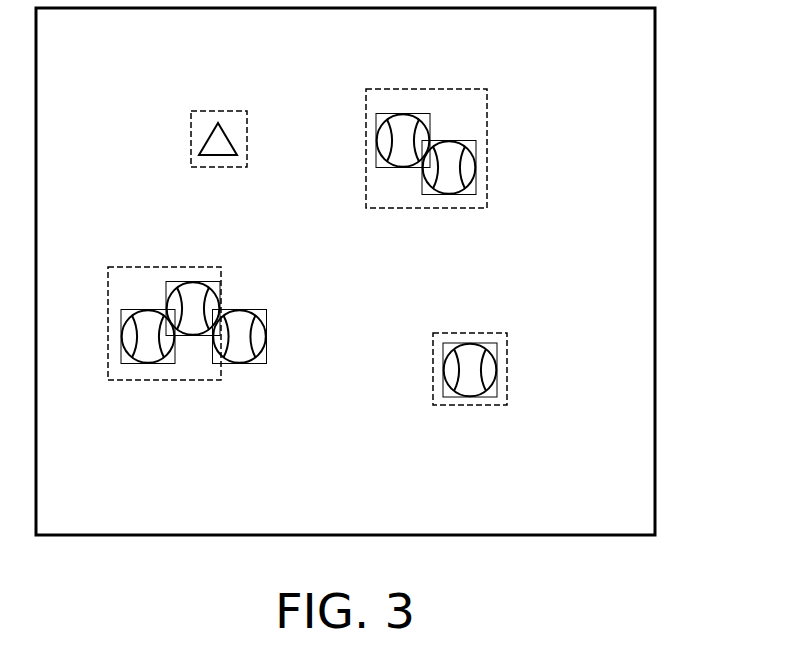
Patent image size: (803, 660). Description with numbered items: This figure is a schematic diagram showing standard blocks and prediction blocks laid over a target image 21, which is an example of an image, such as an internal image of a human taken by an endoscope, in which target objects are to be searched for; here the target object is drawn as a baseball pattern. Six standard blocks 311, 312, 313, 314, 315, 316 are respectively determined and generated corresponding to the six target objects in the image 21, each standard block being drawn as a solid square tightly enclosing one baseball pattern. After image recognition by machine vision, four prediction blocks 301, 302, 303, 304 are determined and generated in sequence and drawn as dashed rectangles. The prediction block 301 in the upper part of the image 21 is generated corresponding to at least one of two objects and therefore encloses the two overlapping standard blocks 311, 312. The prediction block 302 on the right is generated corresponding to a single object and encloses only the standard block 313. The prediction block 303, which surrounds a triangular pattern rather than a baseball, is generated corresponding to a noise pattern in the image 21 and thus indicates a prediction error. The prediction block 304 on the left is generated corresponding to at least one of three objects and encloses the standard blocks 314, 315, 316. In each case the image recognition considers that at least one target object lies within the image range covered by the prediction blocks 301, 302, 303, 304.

The image 21 is at (656, 270).
The prediction block 301 is at (418, 89).
The prediction block 302 is at (468, 333).
The prediction block 303 is at (213, 111).
The prediction block 304 is at (133, 267).
The standard block 311 is at (376, 118).
The standard block 312 is at (476, 147).
The standard block 313 is at (497, 349).
The standard block 314 is at (130, 363).
The standard block 315 is at (208, 282).
The standard block 316 is at (266, 315).